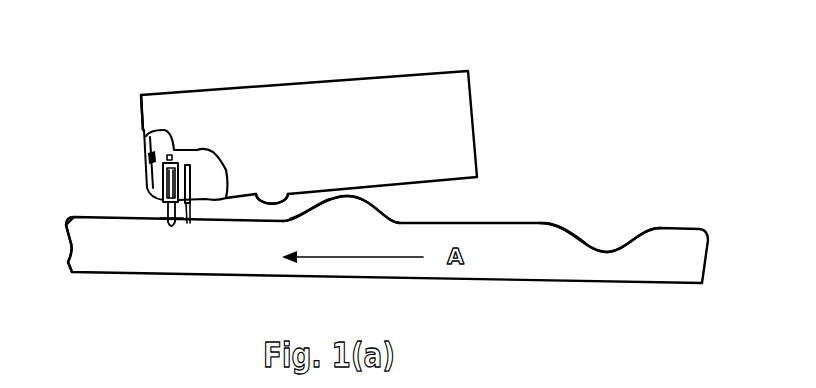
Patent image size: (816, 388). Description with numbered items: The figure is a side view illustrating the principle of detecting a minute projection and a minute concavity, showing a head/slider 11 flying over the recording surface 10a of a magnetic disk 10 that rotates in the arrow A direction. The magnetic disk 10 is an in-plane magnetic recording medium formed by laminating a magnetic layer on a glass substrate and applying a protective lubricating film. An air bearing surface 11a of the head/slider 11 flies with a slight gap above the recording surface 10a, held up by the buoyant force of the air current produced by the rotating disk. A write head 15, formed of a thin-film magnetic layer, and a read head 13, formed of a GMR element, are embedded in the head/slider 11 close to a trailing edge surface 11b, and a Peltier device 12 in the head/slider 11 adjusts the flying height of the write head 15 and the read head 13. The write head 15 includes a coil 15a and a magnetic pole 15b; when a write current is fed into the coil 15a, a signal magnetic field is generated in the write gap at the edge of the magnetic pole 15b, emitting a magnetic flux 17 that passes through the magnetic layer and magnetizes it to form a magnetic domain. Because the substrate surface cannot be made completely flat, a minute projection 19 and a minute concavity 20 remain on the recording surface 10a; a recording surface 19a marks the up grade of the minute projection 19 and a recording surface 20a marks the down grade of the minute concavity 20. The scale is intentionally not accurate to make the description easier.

The magnetic disk 10 is at (521, 287).
The recording surface 10a is at (110, 217).
The head/slider 11 is at (270, 66).
The air bearing surface 11a is at (286, 193).
The trailing edge surface 11b is at (142, 110).
The Peltier device 12 is at (150, 188).
The read head 13 is at (197, 151).
The write head 15 is at (150, 137).
The coil 15a is at (170, 152).
The magnetic pole 15b is at (189, 222).
The magnetic flux 17 is at (166, 224).
The minute projection 19 is at (393, 210).
The recording surface 19a is at (311, 208).
The minute concavity 20 is at (611, 226).
The recording surface 20a is at (562, 233).